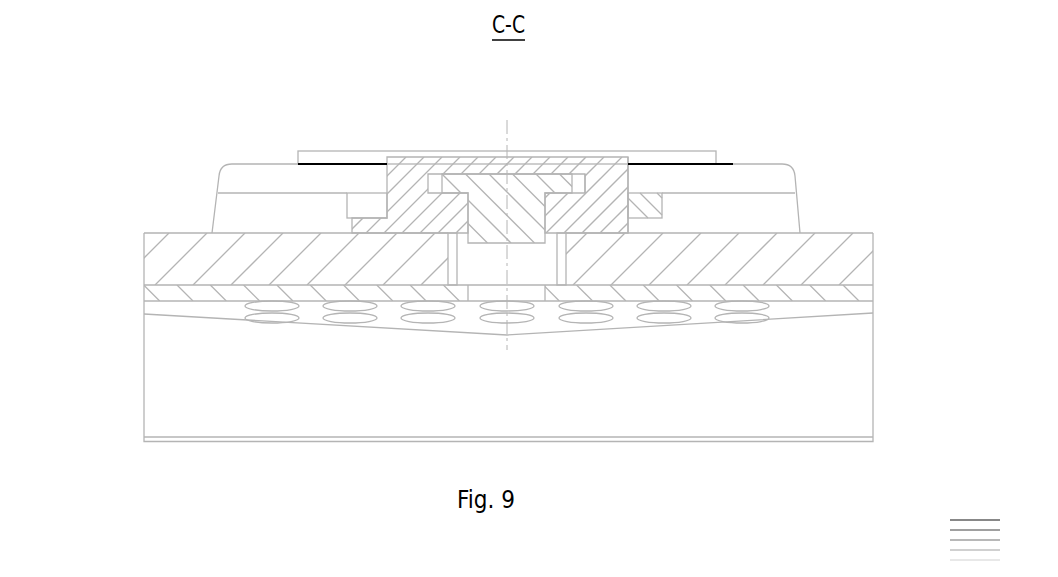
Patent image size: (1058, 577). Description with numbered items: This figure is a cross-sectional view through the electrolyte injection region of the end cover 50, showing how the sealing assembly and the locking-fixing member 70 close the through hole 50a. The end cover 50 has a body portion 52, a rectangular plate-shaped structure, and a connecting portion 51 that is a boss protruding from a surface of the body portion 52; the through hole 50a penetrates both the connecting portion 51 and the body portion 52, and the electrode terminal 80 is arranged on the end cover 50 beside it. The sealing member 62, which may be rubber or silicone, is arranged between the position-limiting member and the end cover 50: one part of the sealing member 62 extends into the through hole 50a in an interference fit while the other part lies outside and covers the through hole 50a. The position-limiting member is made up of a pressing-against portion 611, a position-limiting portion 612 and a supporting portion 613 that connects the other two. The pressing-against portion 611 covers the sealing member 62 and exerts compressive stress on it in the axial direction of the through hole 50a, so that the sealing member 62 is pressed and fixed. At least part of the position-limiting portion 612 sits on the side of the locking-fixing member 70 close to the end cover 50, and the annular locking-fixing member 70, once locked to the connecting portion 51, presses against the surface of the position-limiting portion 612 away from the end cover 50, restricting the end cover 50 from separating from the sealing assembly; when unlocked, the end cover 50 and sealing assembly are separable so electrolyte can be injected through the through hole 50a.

The end cover 50 is at (613, 378).
The through hole 50a is at (483, 265).
The connecting portion 51 is at (567, 218).
The body portion 52 is at (650, 260).
The sealing member 62 is at (497, 200).
The pressing-against portion 611 is at (549, 160).
The position-limiting portion 612 is at (655, 227).
The supporting portion 613 is at (605, 182).
The locking-fixing member 70 is at (370, 205).
The electrode terminal 80 is at (242, 210).